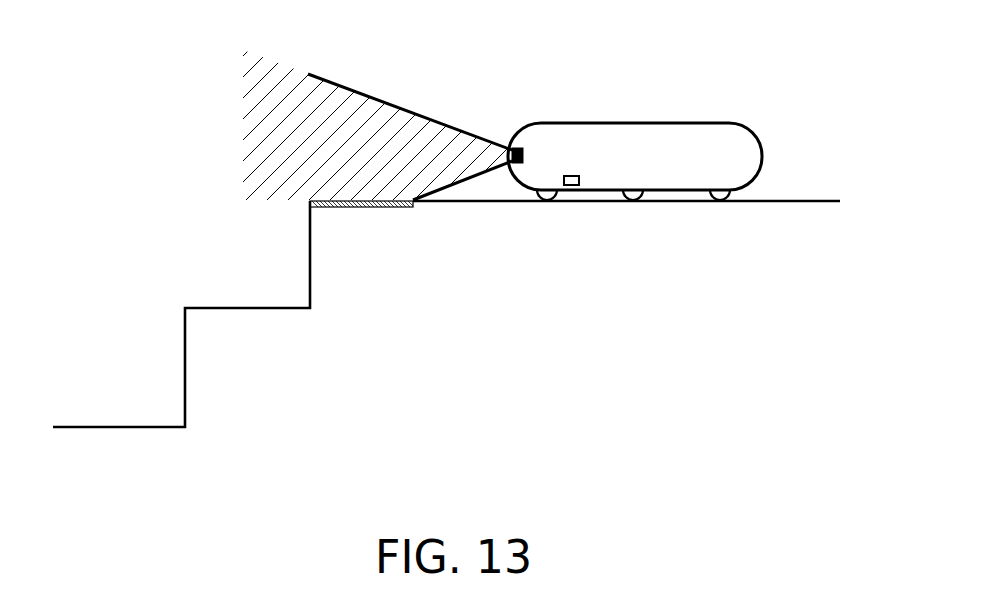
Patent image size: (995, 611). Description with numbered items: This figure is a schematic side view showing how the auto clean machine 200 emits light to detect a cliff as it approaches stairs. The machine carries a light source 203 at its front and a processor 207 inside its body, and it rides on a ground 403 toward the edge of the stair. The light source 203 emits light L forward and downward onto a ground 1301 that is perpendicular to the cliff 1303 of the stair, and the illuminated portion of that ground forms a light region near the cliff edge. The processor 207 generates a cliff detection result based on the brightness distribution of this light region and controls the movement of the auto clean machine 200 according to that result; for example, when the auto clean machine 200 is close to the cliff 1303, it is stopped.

The light L is at (388, 133).
The cliff 1303 is at (310, 252).
The ground 1301 is at (472, 203).
The ground 403 is at (622, 262).
The auto clean machine 200 is at (764, 153).
The light source 203 is at (517, 146).
The processor 207 is at (573, 176).